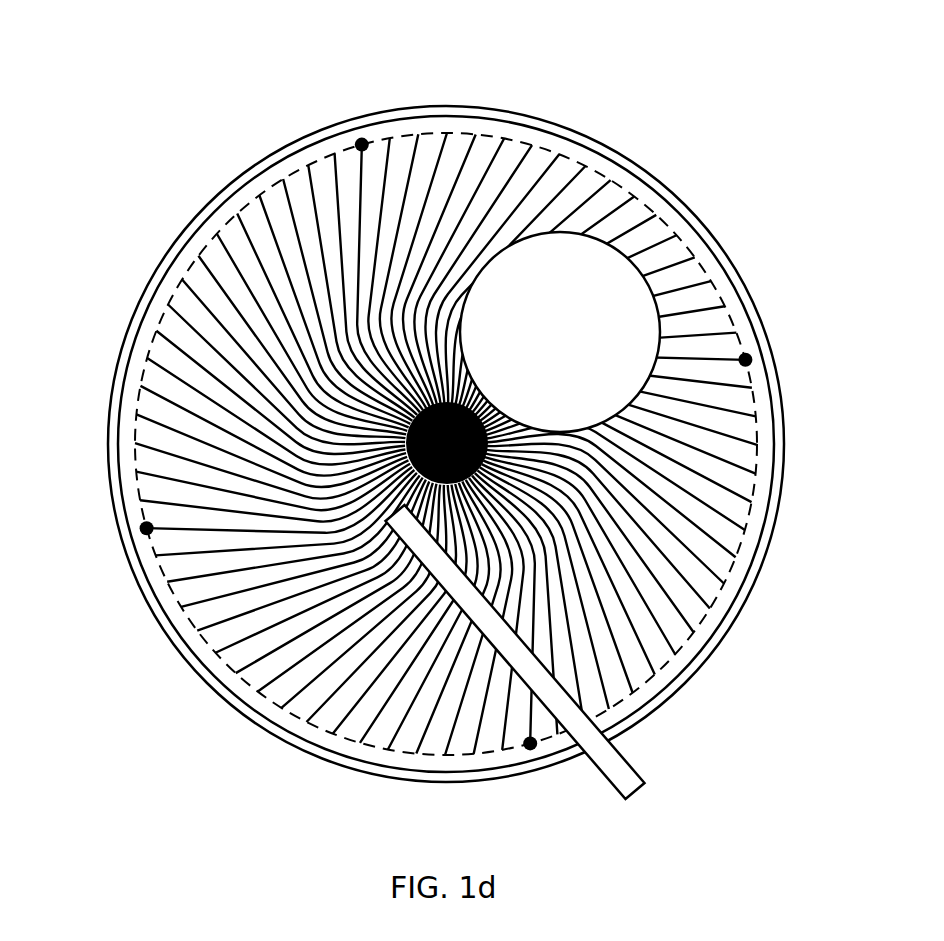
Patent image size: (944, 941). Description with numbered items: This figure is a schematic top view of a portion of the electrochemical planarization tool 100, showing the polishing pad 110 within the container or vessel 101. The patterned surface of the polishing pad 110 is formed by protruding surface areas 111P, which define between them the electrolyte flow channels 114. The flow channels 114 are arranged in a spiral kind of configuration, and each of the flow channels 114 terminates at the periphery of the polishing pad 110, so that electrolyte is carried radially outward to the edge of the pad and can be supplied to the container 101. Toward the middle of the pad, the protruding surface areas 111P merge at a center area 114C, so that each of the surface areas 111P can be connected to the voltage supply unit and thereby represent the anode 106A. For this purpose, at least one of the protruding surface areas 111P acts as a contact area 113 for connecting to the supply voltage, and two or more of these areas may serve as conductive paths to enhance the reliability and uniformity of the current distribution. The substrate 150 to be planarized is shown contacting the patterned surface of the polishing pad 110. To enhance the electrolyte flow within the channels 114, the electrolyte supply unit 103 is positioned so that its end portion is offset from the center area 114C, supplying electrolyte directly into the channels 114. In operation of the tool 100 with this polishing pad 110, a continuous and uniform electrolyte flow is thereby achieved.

The electrochemical planarization tool 100 is at (804, 86).
The container or vessel 101 is at (683, 191).
The polishing pad 110 is at (574, 150).
The protruding surface areas 111P is at (472, 132).
The electrolyte flow channels 114 is at (273, 200).
The contact area 113 is at (177, 527).
The center area 114C is at (592, 498).
The substrate 150 is at (622, 266).
The electrolyte supply unit 103 is at (648, 786).
The anode 106A is at (140, 528).